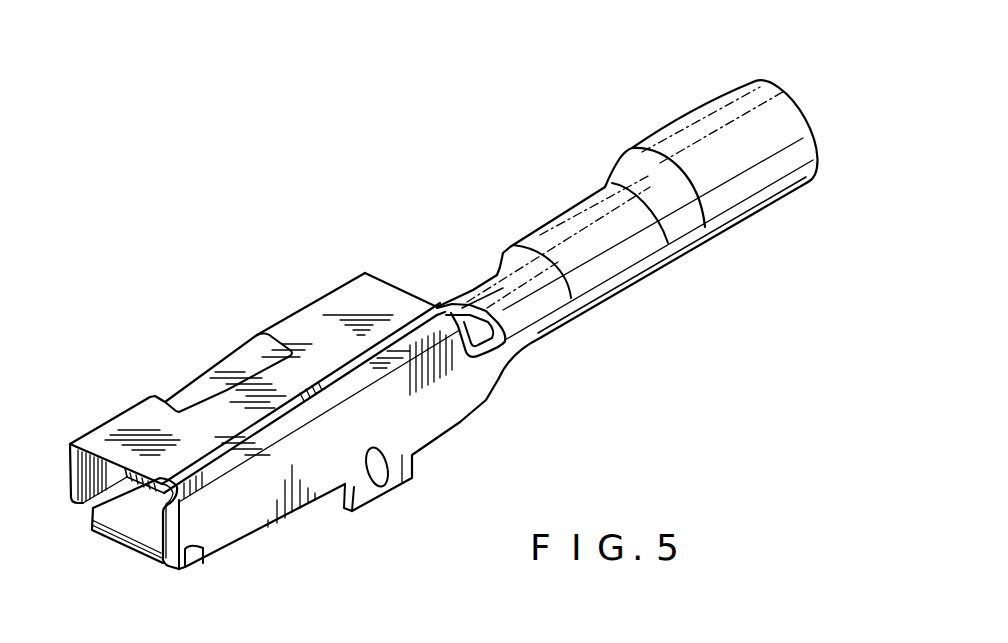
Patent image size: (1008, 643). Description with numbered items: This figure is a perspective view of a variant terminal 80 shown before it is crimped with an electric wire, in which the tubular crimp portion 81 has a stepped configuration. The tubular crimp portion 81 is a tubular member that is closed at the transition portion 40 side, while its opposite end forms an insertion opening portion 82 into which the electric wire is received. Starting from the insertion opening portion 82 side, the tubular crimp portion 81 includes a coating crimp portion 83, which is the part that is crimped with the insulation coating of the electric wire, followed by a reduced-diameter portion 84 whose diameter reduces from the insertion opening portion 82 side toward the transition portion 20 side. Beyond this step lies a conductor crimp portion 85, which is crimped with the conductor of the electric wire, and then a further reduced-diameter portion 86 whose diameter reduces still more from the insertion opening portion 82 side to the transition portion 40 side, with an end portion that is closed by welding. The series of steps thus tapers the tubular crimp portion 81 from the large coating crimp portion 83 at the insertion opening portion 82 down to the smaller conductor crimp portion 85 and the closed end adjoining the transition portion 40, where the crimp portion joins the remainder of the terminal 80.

The transition portion 20 is at (287, 315).
The transition portion 40 is at (437, 307).
The terminal 80 is at (573, 393).
The tubular crimp portion 81 is at (709, 103).
The insertion opening portion 82 is at (797, 102).
The coating crimp portion 83 is at (667, 130).
The reduced-diameter portion 84 is at (630, 167).
The conductor crimp portion 85 is at (542, 237).
The reduced-diameter portion 86 is at (492, 278).